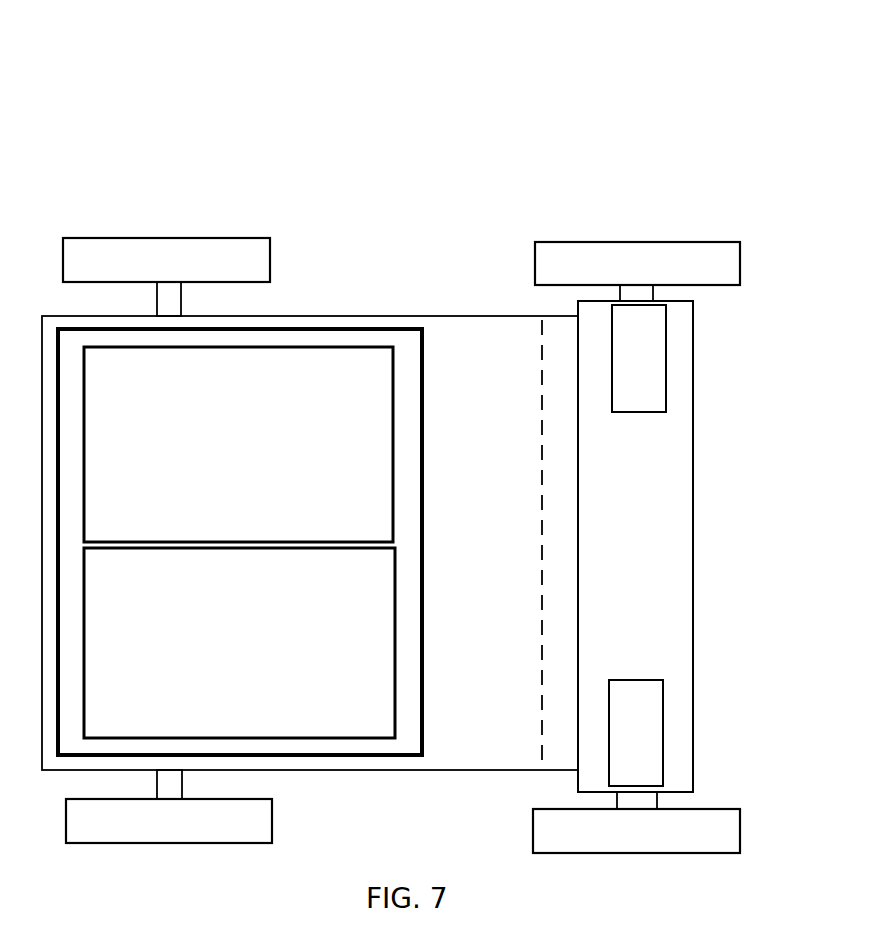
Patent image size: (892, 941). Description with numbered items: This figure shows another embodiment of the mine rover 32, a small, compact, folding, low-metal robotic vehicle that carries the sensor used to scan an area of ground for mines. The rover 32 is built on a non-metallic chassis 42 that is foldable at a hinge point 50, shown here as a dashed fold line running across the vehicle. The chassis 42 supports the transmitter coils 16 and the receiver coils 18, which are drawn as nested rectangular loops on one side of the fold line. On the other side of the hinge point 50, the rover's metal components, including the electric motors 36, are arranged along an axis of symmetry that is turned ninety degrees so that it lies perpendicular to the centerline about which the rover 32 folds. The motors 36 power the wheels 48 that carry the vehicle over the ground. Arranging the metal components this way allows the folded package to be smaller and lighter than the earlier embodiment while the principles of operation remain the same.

The mine rover 32 is at (595, 82).
The transmitter coils 16 is at (423, 505).
The receiver coils 18 is at (200, 347).
The hinge points 50 is at (542, 373).
The chassis 42 is at (693, 582).
The electric motors 36 is at (656, 371).
The wheels 48 is at (655, 279).